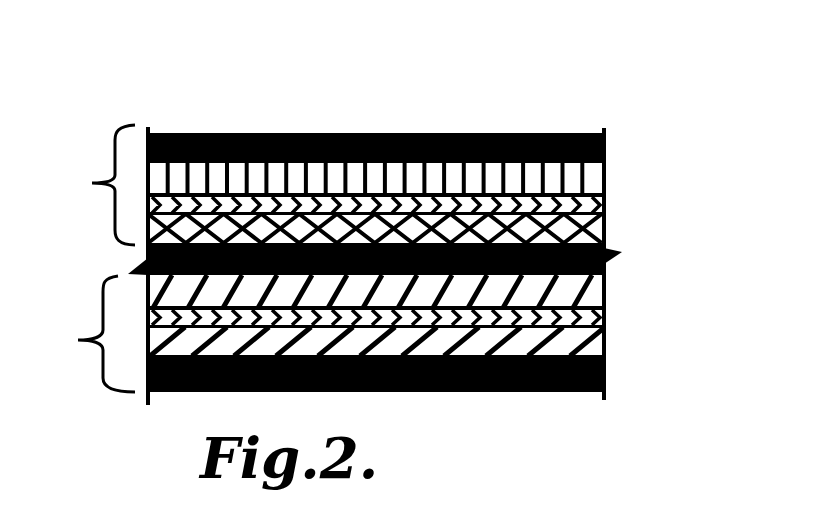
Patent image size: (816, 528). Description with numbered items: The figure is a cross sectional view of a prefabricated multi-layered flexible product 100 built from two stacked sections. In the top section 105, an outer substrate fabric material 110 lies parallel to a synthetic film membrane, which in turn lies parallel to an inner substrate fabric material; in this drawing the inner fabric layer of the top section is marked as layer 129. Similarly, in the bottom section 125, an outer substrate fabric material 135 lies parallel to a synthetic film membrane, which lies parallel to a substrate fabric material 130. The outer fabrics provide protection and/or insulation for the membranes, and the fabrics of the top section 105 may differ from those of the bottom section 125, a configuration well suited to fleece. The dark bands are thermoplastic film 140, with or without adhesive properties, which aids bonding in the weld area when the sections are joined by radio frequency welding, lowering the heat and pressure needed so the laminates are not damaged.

The multi-layered flexible product 100 is at (598, 112).
The top section 105 is at (366, 185).
The outer substrate fabric material 110 is at (605, 178).
The bottom section 125 is at (361, 333).
The reinforcing layer 129 is at (605, 231).
The substrate fabric material 130 is at (607, 289).
The outer substrate fabric material 135 is at (607, 343).
The thermoplastic film 140 is at (607, 148).